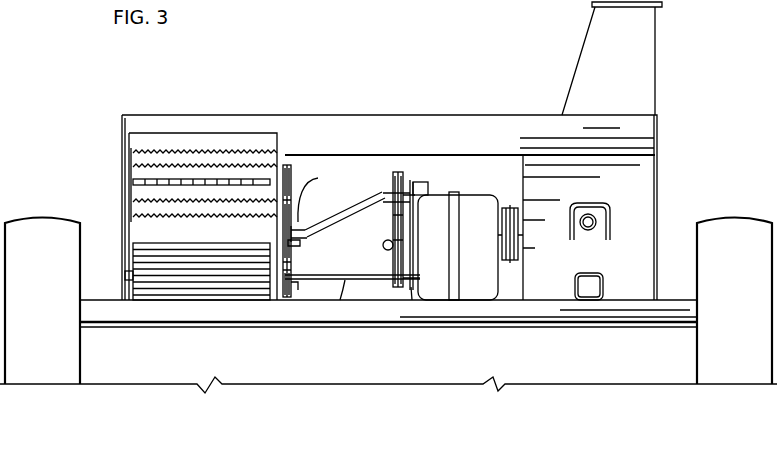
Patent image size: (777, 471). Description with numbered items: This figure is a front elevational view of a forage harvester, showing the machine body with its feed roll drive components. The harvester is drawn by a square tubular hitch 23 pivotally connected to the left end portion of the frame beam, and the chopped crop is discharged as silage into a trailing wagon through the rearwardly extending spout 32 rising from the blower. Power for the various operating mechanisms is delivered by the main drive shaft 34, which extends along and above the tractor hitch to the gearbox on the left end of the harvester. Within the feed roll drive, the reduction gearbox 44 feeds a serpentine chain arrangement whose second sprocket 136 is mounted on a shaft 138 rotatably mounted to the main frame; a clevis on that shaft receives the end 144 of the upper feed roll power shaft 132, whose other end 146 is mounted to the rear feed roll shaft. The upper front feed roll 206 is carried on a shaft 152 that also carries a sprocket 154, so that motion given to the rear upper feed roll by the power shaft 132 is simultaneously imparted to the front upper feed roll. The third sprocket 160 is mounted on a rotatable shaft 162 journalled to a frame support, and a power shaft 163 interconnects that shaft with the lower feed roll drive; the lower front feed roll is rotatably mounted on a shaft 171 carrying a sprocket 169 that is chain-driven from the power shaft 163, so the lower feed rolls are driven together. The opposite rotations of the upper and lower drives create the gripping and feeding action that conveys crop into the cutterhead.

The square tubular hitch 23 is at (603, 283).
The rearwardly extending spout 32 is at (655, 36).
The main drive shaft 34 is at (590, 231).
The reduction gearbox 44 is at (460, 282).
The upper feed roll power shaft 132 is at (348, 192).
The second sprocket 136 is at (399, 172).
The shaft 138 is at (412, 180).
The end of upper feed roll power shaft 144 is at (386, 241).
The other end of shaft 146 is at (326, 192).
The shaft 152 is at (296, 246).
The sprocket 154 is at (287, 166).
The third sprocket 160 is at (394, 280).
The rotatable shaft 162 is at (412, 300).
The power shaft 163 is at (341, 300).
The sprocket 169 is at (313, 290).
The shaft 171 is at (274, 300).
The upper front feed roll 206 is at (133, 151).